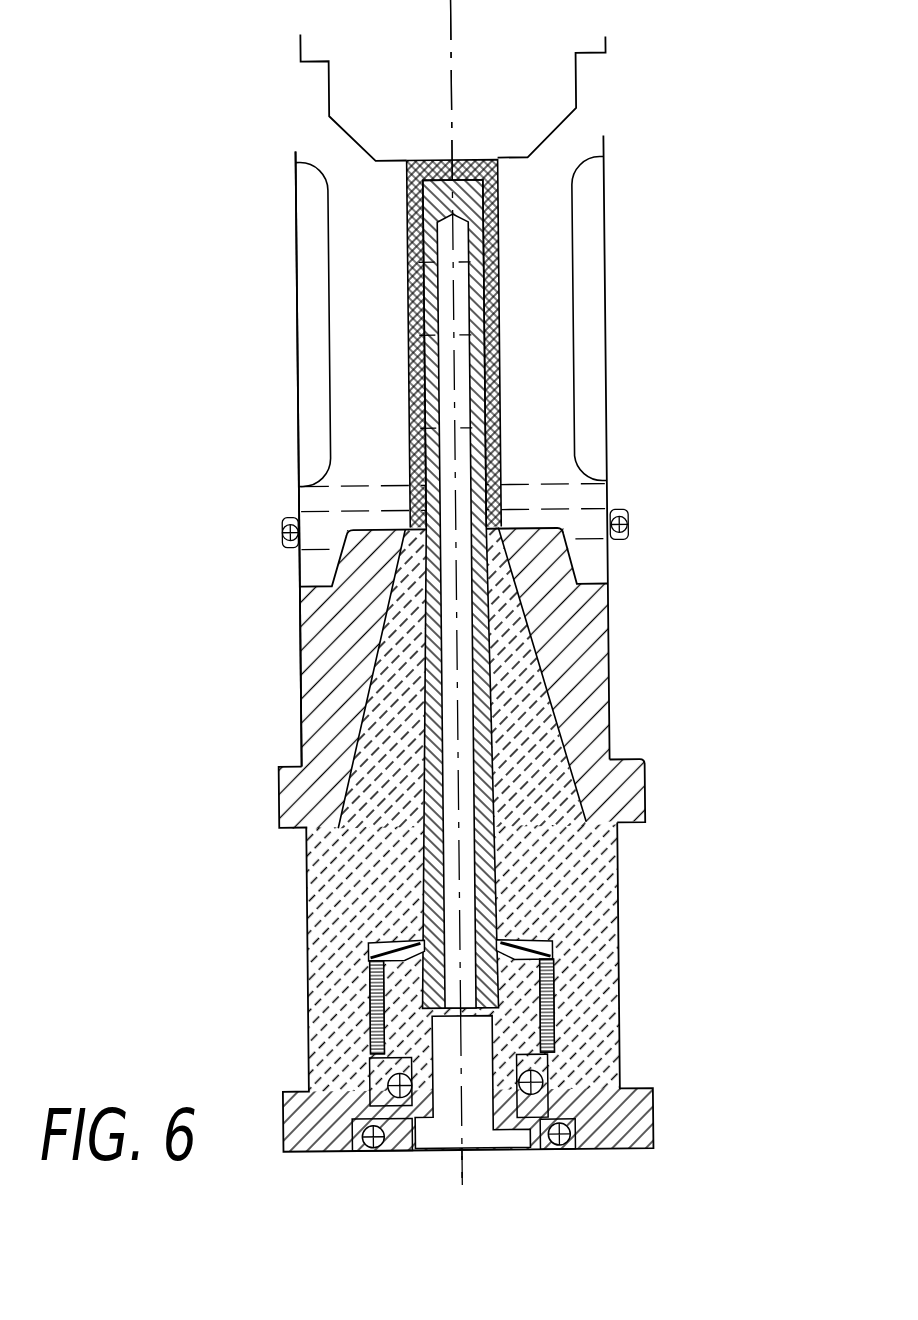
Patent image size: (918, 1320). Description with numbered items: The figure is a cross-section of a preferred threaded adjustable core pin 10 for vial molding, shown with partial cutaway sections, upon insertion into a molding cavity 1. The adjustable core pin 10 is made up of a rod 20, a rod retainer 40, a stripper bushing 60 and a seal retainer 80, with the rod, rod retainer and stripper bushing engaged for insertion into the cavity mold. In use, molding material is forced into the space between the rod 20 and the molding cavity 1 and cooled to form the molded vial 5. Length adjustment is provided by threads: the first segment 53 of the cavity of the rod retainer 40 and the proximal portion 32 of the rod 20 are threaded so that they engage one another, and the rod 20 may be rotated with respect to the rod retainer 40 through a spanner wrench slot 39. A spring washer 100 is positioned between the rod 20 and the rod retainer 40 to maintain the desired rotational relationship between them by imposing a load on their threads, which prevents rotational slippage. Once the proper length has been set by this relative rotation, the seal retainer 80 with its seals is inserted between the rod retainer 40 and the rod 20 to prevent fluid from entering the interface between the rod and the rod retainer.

The molding cavity 1 is at (549, 226).
The molded vial 5 is at (504, 378).
The adjustable core pin 10 is at (205, 589).
The rod 20 is at (485, 758).
The proximal portion 32 is at (365, 944).
The spanner wrench slot 39 is at (500, 1136).
The rod retainer 40 is at (577, 861).
The first segment 53 is at (368, 1014).
The stripper bushing 60 is at (578, 613).
The seal retainer 80 is at (523, 1113).
The spring washer 100 is at (500, 942).